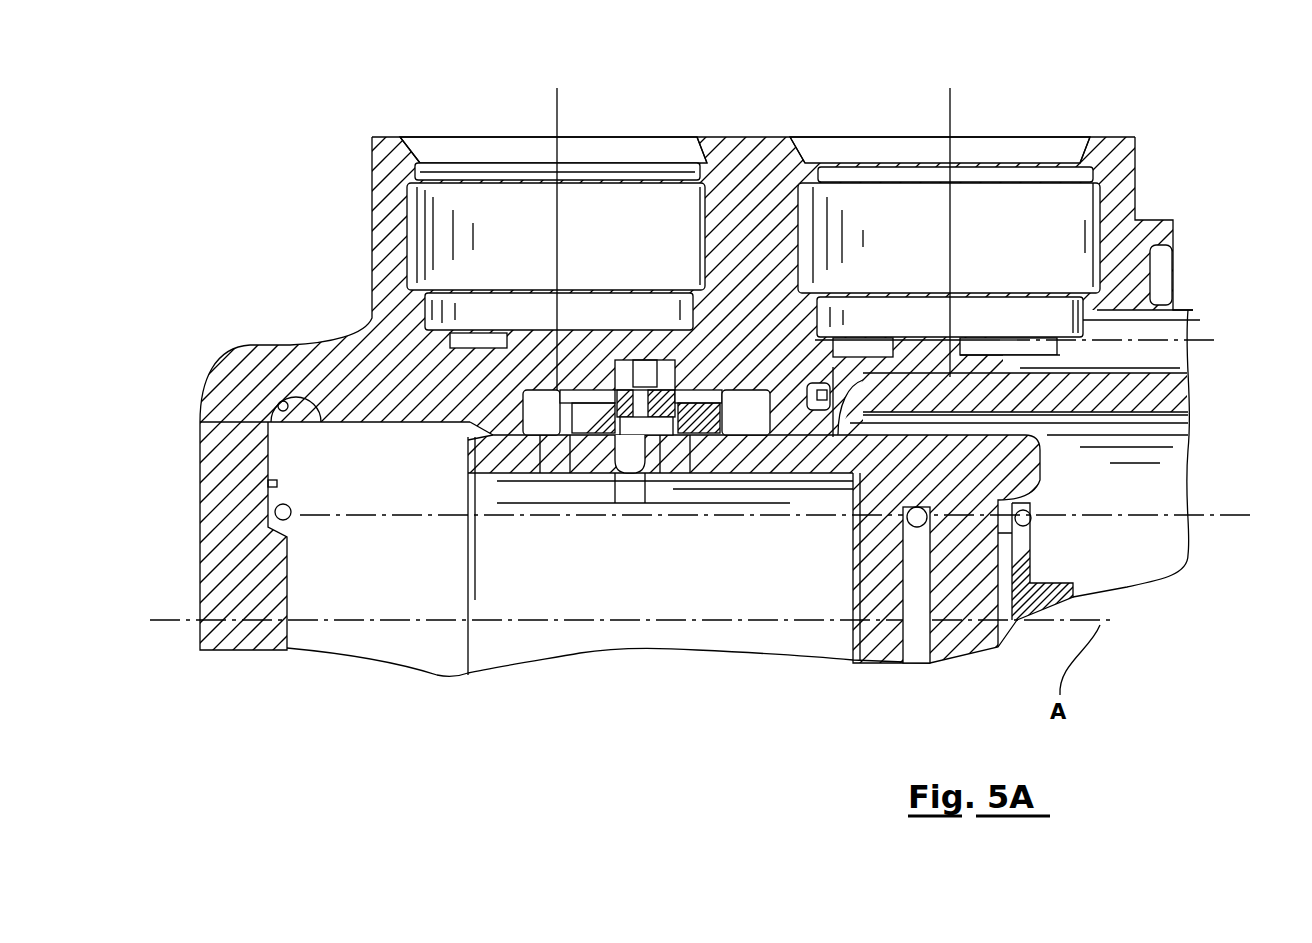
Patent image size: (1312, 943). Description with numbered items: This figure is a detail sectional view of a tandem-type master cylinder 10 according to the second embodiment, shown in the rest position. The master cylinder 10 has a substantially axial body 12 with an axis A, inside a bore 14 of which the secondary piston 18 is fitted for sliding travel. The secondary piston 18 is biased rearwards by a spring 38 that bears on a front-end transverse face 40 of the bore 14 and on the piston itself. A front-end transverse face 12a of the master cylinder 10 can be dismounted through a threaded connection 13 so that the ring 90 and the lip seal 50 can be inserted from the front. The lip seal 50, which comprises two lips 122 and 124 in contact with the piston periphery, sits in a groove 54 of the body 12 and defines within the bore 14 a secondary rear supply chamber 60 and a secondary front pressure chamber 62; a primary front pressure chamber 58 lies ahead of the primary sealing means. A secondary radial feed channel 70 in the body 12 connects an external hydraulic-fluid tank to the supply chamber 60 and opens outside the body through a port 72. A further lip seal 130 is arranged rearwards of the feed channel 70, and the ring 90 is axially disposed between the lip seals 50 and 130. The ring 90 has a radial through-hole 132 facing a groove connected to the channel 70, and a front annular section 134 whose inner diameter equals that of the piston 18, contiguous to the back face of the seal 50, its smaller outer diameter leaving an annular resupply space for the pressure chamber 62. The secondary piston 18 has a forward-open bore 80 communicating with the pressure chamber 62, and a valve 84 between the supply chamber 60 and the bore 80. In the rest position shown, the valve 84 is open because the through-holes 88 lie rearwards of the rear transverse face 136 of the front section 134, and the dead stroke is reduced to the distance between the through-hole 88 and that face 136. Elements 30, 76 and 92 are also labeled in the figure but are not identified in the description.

The master cylinder 10 is at (1212, 152).
The body 12 is at (203, 385).
The front-end transverse face 12a is at (200, 537).
The threaded connection 13 is at (197, 413).
The bore 14 is at (330, 422).
The secondary piston 18 is at (968, 610).
The sleeve 30 is at (468, 462).
The spring 38 is at (346, 515).
The front-end transverse face 40 is at (262, 481).
The lip seal 50 is at (575, 395).
The groove 54 is at (543, 392).
The primary front pressure chamber 58 is at (1147, 547).
The secondary rear supply chamber 60 is at (700, 393).
The secondary front pressure chamber 62 is at (396, 443).
The secondary radial feed channel 70 is at (652, 360).
The port 72 is at (413, 165).
The o-ring 76 is at (280, 398).
The bore 80 is at (850, 500).
The valve 84 is at (668, 473).
The through-hole 88 is at (620, 460).
The ring 90 is at (603, 395).
The bearing retainer 92 is at (852, 385).
The lip 122 is at (540, 435).
The lip 124 is at (570, 443).
The lip seal 130 is at (745, 435).
The radial through-hole 132 is at (640, 390).
The front annular section 134 is at (557, 257).
The rear transverse face 136 is at (650, 473).